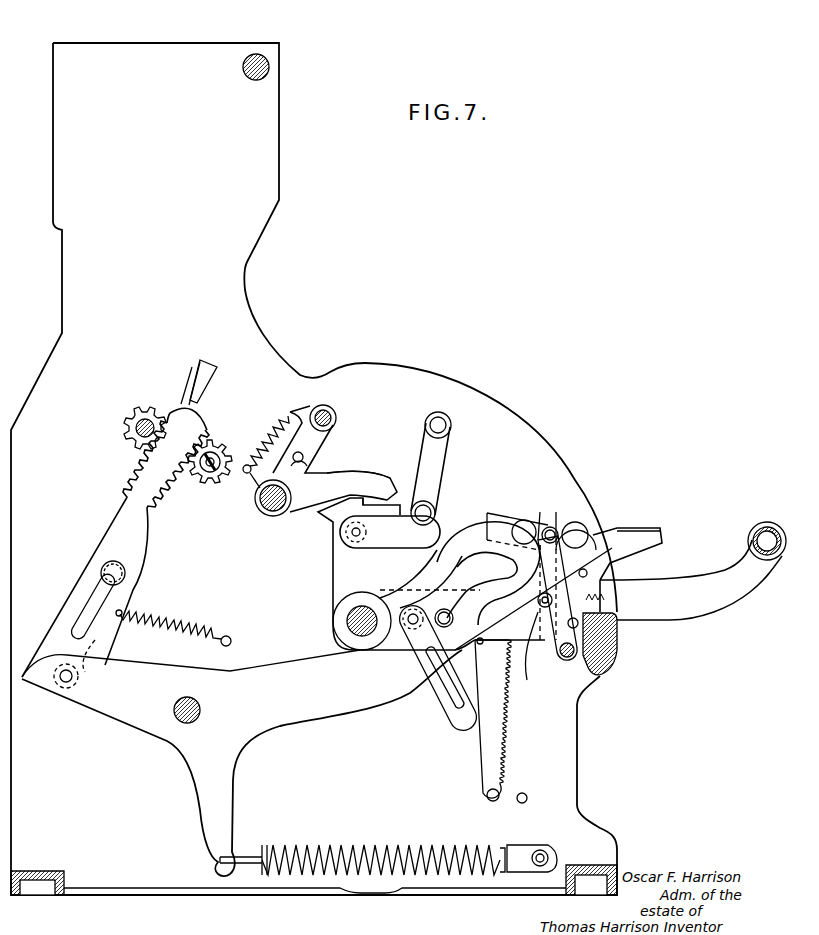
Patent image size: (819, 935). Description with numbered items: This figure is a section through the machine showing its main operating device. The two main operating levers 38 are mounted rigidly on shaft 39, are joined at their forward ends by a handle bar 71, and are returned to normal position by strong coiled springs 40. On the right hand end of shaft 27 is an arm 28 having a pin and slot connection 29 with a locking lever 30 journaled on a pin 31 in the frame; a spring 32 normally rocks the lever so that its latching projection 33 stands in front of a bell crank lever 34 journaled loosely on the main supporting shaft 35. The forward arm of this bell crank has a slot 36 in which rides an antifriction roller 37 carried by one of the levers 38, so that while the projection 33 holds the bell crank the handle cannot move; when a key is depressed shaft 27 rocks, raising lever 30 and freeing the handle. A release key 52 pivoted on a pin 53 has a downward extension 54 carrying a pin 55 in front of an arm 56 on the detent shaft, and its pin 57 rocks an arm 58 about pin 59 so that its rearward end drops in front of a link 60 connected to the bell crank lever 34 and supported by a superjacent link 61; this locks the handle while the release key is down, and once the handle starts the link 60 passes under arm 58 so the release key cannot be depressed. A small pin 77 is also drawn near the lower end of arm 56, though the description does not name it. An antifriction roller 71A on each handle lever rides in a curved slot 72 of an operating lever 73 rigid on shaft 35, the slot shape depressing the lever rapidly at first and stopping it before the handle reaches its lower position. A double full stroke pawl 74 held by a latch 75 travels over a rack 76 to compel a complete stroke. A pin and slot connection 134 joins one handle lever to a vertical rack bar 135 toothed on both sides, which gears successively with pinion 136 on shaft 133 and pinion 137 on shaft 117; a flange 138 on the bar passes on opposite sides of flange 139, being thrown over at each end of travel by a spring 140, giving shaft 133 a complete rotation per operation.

The shaft 27 is at (331, 414).
The arm 28 is at (316, 448).
The pin and slot connection 29 is at (303, 460).
The locking lever 30 is at (362, 472).
The pin 31 is at (276, 517).
The spring 32 is at (268, 440).
The latching projection 33 is at (380, 503).
The bell crank lever 34 is at (333, 573).
The main supporting shaft 35 is at (341, 628).
The slot 36 is at (455, 715).
The antifriction roller 37 is at (411, 628).
The main operating lever 38 is at (320, 716).
The shaft 39 is at (193, 698).
The coiled spring 40 is at (416, 850).
The release key 52 is at (622, 538).
The pin 53 is at (586, 530).
The downward extension 54 is at (550, 527).
The pin 55 is at (549, 597).
The arm 56 is at (548, 642).
The pin 57 is at (556, 520).
The arm 58 is at (493, 512).
The pin 59 is at (525, 520).
The link 60 is at (440, 540).
The superjacent link 61 is at (441, 465).
The handle bar 71 is at (767, 522).
The antifriction roller 71A is at (483, 645).
The curved slot 72 is at (490, 560).
The operating lever 73 is at (412, 588).
The double full stroke pawl 74 is at (528, 680).
The latch 75 is at (620, 638).
The rack 76 is at (504, 708).
The pin 77 is at (568, 658).
The shaft 117 is at (209, 485).
The shaft 133 is at (146, 414).
The pin and slot connection 134 is at (60, 686).
The vertical rack bar 135 is at (127, 572).
The pinion 136 is at (140, 447).
The pinion 137 is at (218, 482).
The flange 138 is at (194, 375).
The flange 139 is at (208, 386).
The spring 140 is at (180, 626).